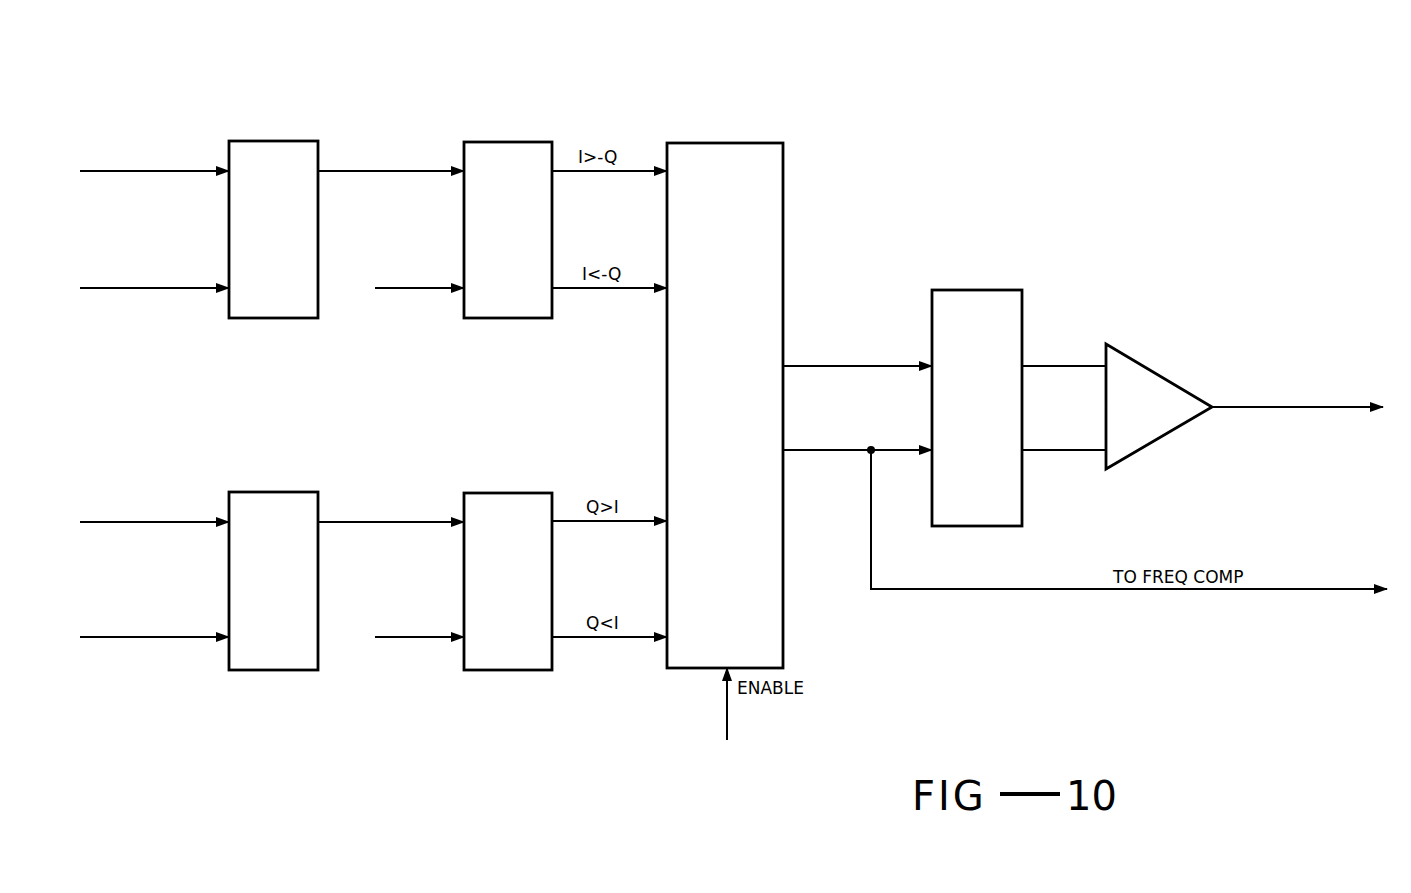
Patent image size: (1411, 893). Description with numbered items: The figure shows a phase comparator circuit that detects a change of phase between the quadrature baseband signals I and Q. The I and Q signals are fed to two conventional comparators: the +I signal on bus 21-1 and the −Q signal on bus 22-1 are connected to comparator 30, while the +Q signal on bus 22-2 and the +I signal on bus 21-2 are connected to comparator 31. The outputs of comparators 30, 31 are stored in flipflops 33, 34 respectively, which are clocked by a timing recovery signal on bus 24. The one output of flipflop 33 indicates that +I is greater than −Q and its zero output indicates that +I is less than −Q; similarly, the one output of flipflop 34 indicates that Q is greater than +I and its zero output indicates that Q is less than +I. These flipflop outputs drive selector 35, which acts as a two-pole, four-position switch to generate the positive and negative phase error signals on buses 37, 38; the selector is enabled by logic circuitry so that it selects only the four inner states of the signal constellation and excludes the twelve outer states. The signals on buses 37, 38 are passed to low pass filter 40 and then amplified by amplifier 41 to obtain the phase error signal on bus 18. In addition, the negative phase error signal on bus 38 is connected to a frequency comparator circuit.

The bus 18 is at (1351, 405).
The bus 21-1 is at (113, 171).
The bus 22-1 is at (102, 289).
The bus 22-2 is at (118, 522).
The bus 21-2 is at (108, 638).
The bus 24 is at (386, 289).
The comparator 30 is at (313, 148).
The comparator 31 is at (300, 500).
The flipflop 33 is at (530, 147).
The flipflop 34 is at (535, 498).
The selector 35 is at (775, 183).
The bus 37 is at (862, 368).
The bus 38 is at (840, 452).
The low pass filter 40 is at (1010, 305).
The amplifier 41 is at (1157, 378).